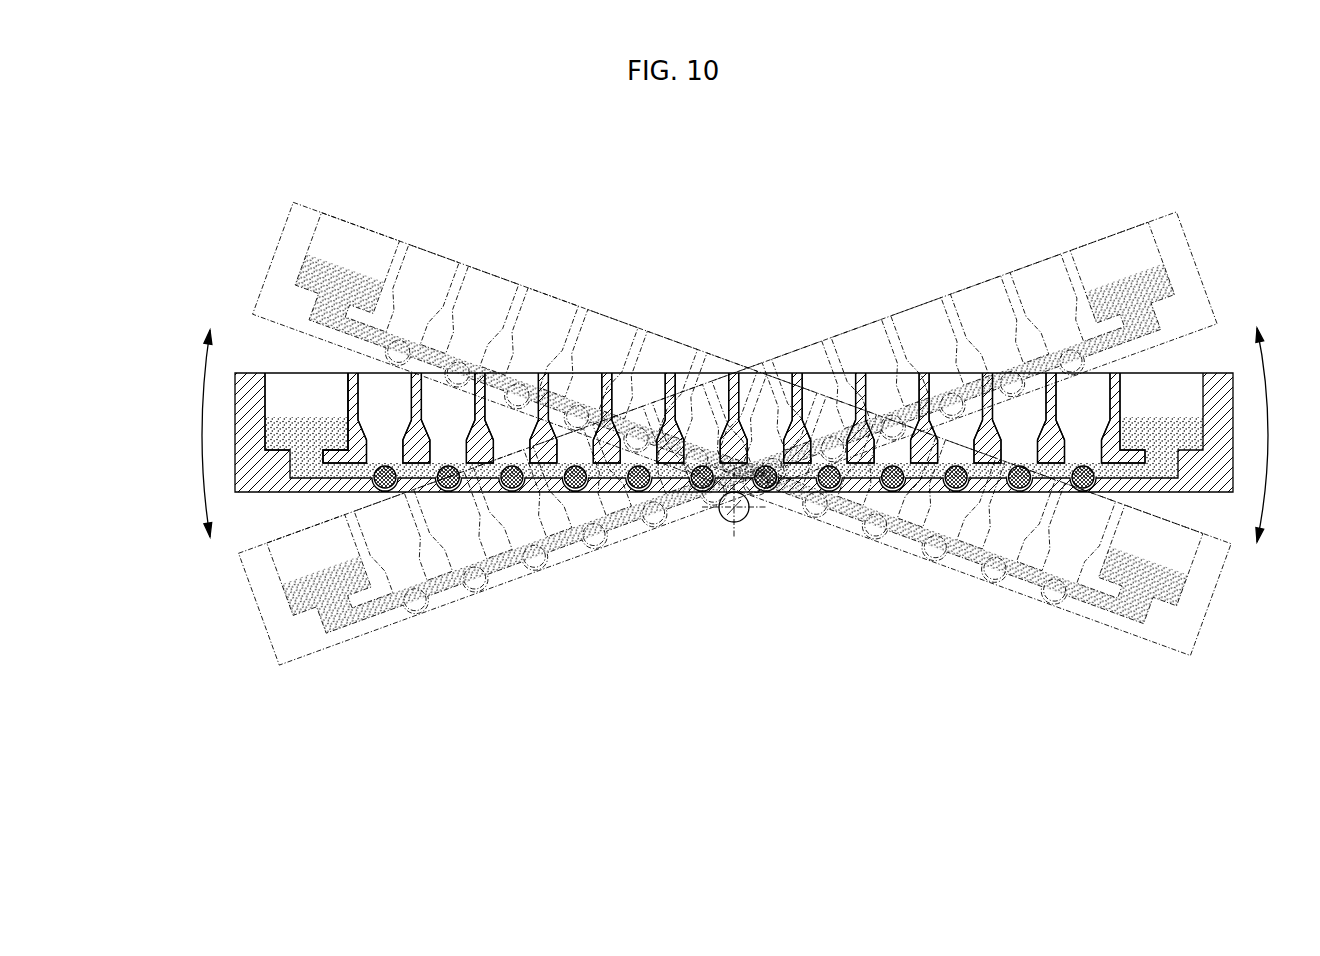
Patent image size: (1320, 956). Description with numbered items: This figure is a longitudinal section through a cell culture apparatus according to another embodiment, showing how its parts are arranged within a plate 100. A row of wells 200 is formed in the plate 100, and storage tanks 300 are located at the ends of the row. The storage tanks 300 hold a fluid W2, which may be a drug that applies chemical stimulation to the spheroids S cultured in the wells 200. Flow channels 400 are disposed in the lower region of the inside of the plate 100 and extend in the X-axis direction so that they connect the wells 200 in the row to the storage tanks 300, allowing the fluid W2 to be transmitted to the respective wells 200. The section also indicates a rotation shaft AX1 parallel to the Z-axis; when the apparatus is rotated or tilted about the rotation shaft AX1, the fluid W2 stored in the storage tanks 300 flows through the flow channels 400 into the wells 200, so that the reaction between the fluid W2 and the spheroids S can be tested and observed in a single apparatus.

The plate 100 is at (1222, 373).
The wells 200 is at (388, 397).
The storage tanks 300 is at (303, 393).
The flow channels 400 is at (347, 468).
The spheroids S is at (450, 486).
The fluid W2 is at (292, 428).
The rotation shaft AX1 is at (722, 522).